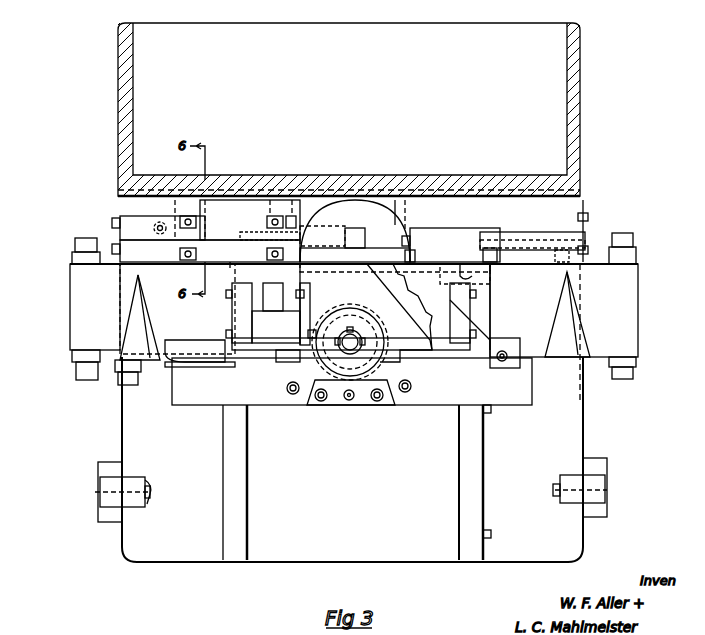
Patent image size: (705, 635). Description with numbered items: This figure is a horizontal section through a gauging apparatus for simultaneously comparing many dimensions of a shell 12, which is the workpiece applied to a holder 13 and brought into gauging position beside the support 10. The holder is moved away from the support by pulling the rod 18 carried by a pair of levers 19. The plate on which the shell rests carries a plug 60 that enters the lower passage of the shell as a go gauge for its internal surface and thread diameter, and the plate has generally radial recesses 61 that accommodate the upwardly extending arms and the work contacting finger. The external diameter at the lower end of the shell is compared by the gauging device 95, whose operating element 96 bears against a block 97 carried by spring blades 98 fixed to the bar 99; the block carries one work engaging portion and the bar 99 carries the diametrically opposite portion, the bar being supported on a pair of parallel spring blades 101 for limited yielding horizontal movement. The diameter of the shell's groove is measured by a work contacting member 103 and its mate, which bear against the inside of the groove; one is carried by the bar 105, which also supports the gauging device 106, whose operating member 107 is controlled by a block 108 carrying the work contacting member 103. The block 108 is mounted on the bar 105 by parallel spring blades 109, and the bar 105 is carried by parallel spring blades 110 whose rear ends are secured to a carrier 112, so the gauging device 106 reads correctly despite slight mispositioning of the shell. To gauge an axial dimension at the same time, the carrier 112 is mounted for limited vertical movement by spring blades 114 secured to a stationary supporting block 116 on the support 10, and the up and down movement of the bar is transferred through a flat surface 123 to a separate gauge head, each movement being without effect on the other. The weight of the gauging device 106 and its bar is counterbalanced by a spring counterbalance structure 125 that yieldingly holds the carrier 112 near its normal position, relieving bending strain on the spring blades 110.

The support 10 is at (580, 40).
The shell 12 is at (358, 383).
The holder 13 is at (503, 398).
The rod 18 is at (130, 500).
The levers 19 is at (98, 468).
The plug 60 is at (348, 356).
The recesses 61 is at (350, 330).
The gauging device 95 is at (638, 285).
The operating element 96 is at (478, 305).
The block 97 is at (445, 308).
The spring blades 98 is at (478, 286).
The bar 99 is at (504, 222).
The parallel spring blades 101 is at (395, 248).
The work contacting member 103 is at (308, 342).
The bar 105 is at (135, 262).
The gauging device 106 is at (95, 290).
The operating member 107 is at (235, 352).
The block 108 is at (262, 342).
The parallel spring blades 109 is at (305, 304).
The parallel spring blades 110 is at (125, 250).
The carrier 112 is at (122, 226).
The spring blades 114 is at (203, 235).
The stationary supporting block 116 is at (240, 212).
The flat surface 123 is at (478, 412).
The spring counterbalance structure 125 is at (150, 236).